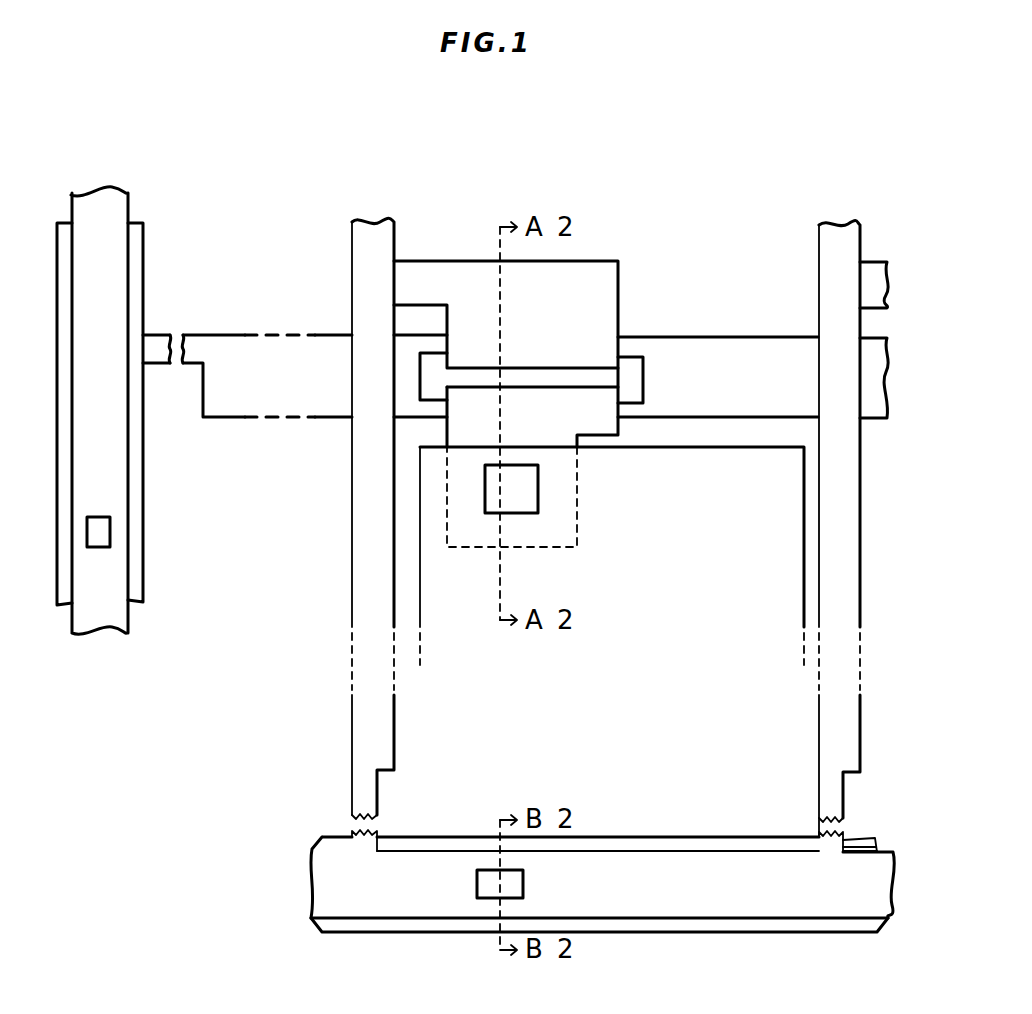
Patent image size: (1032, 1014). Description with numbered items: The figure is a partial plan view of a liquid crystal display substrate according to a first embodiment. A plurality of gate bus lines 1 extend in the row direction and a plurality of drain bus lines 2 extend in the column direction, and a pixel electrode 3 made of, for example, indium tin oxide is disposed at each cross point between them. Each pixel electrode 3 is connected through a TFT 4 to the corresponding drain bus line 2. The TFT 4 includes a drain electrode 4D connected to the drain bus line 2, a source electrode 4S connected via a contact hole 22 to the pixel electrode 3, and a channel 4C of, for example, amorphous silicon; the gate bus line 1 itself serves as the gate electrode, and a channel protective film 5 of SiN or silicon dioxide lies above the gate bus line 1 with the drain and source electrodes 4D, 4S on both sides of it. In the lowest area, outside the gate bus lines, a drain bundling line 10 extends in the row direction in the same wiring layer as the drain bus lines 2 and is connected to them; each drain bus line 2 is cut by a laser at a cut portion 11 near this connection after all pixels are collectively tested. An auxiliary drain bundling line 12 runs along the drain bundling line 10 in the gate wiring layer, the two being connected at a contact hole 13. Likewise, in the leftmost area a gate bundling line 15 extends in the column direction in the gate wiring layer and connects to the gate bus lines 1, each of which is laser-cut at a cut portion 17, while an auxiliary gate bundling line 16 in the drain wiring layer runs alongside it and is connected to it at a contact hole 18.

The gate bus line 1 is at (157, 333).
The drain bus line 2 is at (350, 256).
The pixel electrode 3 is at (806, 497).
The TFT 4 is at (557, 324).
The drain electrode 4D is at (620, 280).
The channel 4C is at (560, 378).
The source electrode 4S is at (607, 435).
The channel protective film 5 is at (645, 378).
The drain bundling line 10 is at (712, 920).
The cut portion 11 is at (856, 828).
The auxiliary drain bundling line 12 is at (345, 932).
The contact hole 13 is at (477, 887).
The gate bundling line 15 is at (145, 550).
The auxiliary gate bundling line 16 is at (130, 617).
The cut portion 17 is at (185, 328).
The contact hole 18 is at (100, 517).
The contact hole 22 is at (540, 505).